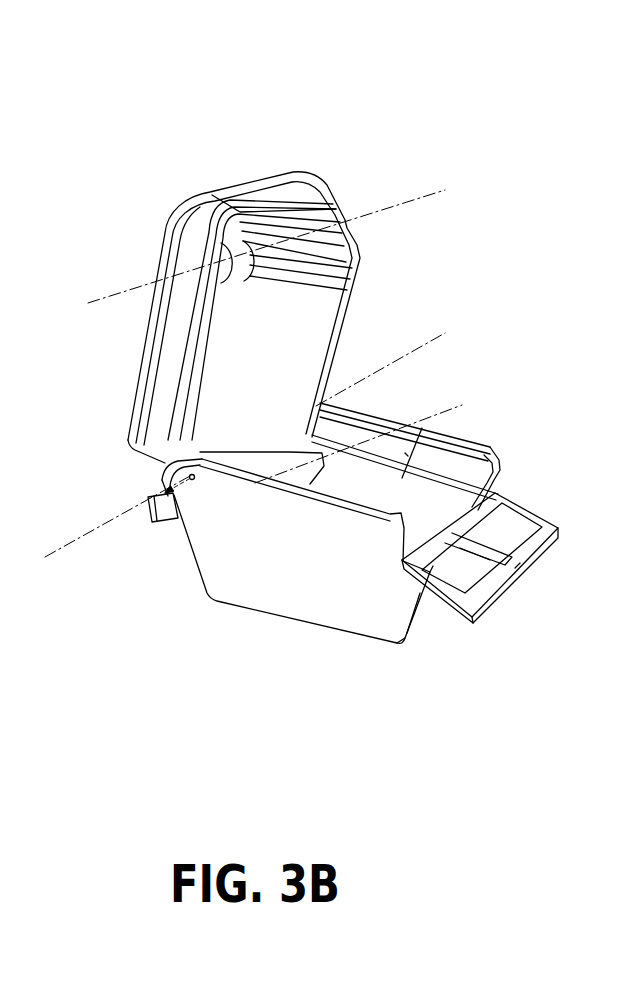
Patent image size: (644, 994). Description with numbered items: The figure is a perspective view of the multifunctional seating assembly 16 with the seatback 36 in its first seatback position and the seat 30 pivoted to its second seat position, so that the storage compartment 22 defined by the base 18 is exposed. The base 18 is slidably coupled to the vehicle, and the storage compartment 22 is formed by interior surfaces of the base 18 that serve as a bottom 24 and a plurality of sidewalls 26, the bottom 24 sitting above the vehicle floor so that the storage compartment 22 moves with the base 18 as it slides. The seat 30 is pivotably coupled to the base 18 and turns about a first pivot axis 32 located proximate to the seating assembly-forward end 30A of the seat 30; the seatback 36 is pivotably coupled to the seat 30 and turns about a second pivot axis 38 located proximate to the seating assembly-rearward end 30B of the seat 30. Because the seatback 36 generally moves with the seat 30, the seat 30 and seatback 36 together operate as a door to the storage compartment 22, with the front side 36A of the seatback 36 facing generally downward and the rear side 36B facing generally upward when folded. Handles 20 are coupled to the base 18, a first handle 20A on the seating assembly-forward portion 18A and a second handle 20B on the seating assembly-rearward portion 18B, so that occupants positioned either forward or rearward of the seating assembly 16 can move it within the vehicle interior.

The multifunctional seating assembly 16 is at (353, 147).
The base 18 is at (320, 588).
The seating assembly-forward portion 18A is at (162, 523).
The seating assembly-rearward portion 18B is at (415, 632).
The handles 20 is at (500, 593).
The first handle 20A is at (163, 520).
The second handle 20B is at (515, 568).
The storage compartment 22 is at (460, 485).
The bottom 24 is at (433, 577).
The sidewalls 26 is at (422, 522).
The seat 30 is at (280, 385).
The seating assembly-forward end 30A is at (277, 470).
The seating assembly-rearward end 30B is at (315, 267).
The first pivot axis 32 is at (77, 540).
The seatback 36 is at (212, 195).
The front side 36A is at (197, 327).
The rear side 36B is at (158, 242).
The second pivot axis 38 is at (88, 303).